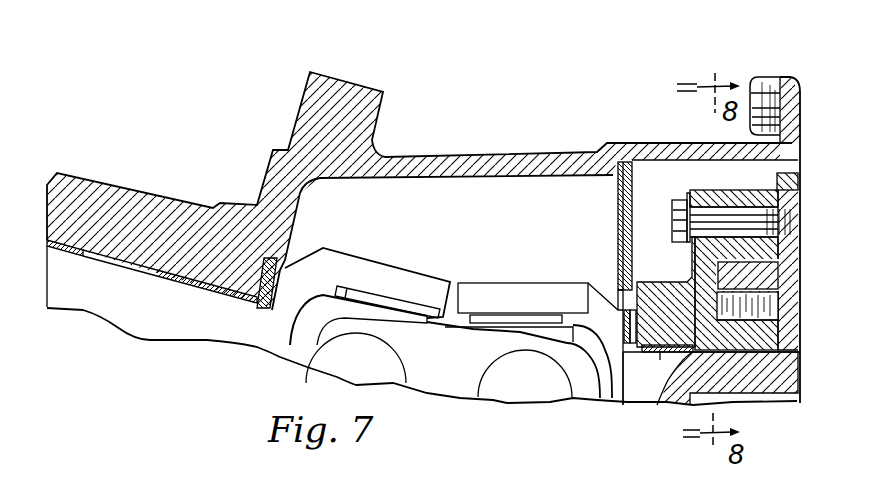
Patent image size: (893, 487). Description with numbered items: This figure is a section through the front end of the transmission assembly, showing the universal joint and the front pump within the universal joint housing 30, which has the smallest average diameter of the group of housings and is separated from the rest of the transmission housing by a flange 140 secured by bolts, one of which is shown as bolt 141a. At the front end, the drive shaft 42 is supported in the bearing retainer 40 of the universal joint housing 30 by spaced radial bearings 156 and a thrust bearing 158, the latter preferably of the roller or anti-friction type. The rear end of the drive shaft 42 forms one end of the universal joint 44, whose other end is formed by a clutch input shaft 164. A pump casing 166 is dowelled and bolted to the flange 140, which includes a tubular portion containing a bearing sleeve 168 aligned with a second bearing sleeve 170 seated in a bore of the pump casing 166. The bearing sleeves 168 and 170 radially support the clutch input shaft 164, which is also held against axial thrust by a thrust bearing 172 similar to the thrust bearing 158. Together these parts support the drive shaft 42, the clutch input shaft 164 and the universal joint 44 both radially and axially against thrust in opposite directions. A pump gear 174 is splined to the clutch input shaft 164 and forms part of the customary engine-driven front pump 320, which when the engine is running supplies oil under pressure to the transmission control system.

The universal joint housing 30 is at (487, 160).
The bearing retainer 40 is at (157, 214).
The drive shaft 42 is at (163, 320).
The universal joint 44 is at (465, 384).
The flange 140 is at (778, 183).
The bolt 141a is at (672, 217).
The radial bearings 156 is at (78, 254).
The thrust bearing 158 is at (270, 290).
The clutch input shaft 164 is at (637, 387).
The pump casing 166 is at (667, 288).
The bearing sleeve 168 is at (800, 348).
The second bearing sleeve 170 is at (670, 352).
The thrust bearing 172 is at (623, 327).
The pump gear 174 is at (762, 355).
The front pump 320 is at (727, 275).